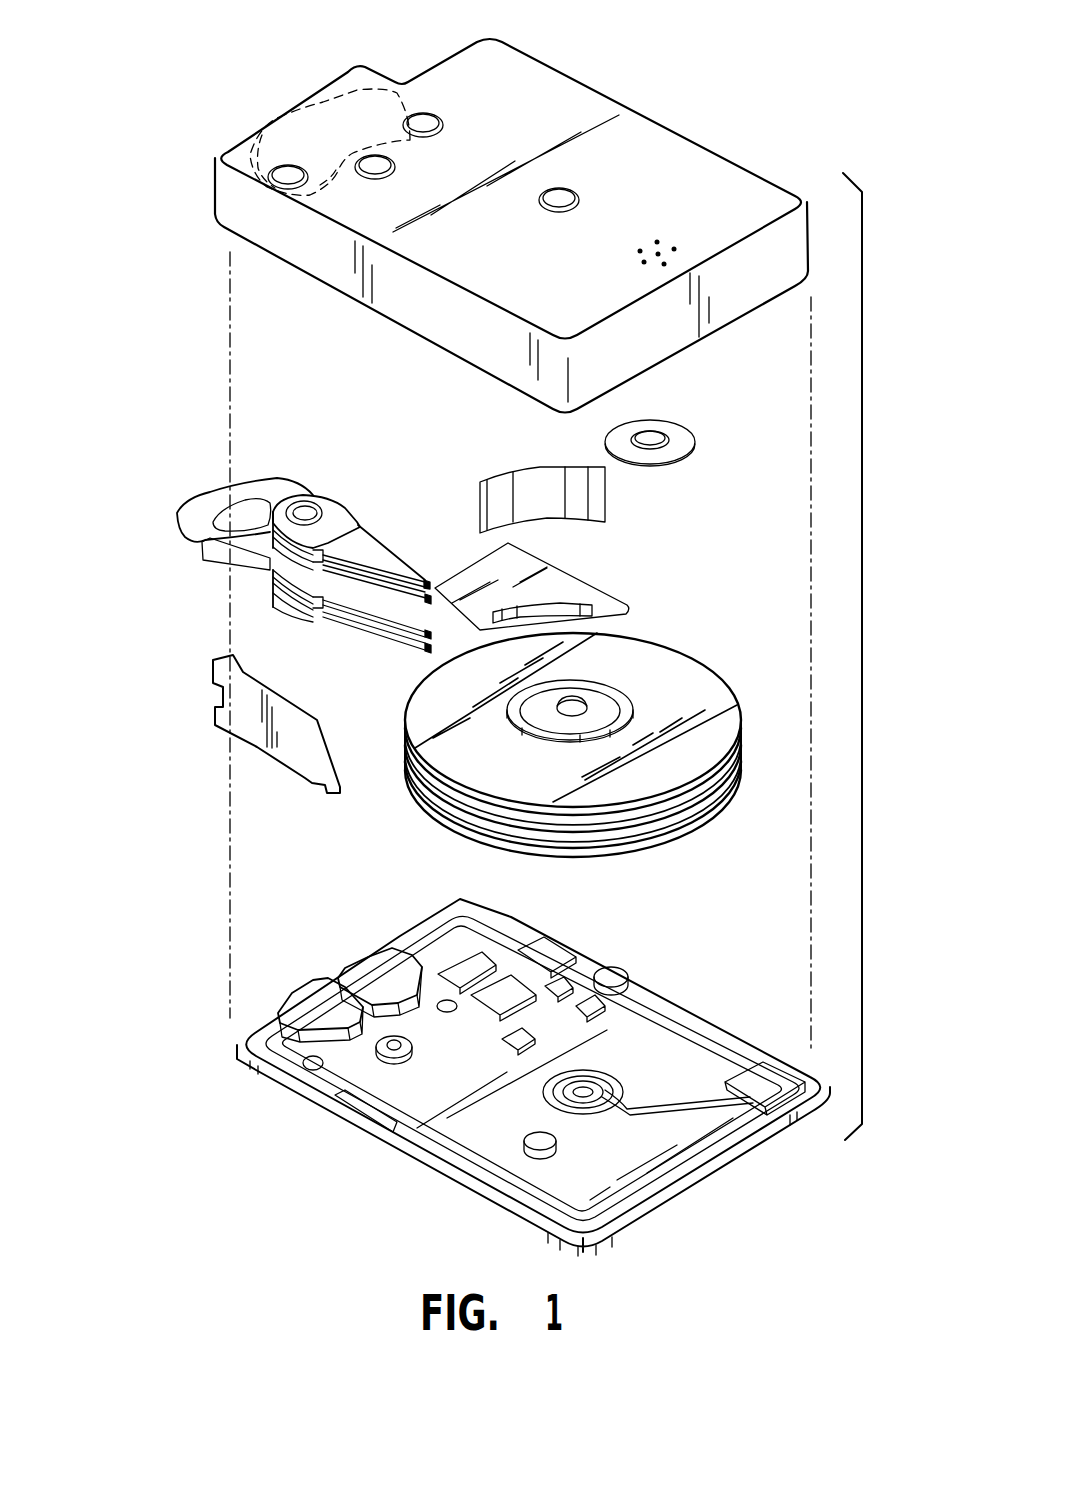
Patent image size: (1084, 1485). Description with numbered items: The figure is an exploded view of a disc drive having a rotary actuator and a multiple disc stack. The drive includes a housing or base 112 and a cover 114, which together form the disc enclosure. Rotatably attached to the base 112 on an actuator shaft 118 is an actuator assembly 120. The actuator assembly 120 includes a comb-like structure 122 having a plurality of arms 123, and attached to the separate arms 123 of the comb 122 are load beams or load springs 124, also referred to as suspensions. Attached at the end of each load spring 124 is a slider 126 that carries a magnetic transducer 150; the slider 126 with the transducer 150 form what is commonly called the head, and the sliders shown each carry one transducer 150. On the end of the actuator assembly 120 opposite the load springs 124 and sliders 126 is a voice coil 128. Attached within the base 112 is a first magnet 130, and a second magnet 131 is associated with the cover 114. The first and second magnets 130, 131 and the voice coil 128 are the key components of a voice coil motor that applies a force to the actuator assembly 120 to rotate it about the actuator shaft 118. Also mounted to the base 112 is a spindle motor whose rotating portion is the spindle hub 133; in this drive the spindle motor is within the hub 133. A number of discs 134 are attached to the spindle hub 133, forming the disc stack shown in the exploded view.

The base 112 is at (712, 1046).
The cover 114 is at (683, 160).
The actuator shaft 118 is at (307, 507).
The actuator assembly 120 is at (250, 562).
The comb-like structure 122 is at (332, 625).
The arms 123 is at (358, 518).
The load beams or load springs 124 is at (378, 553).
The slider 126 is at (427, 580).
The voice coil 128 is at (203, 511).
The first magnet 130 is at (334, 97).
The second magnet 131 is at (303, 1003).
The spindle hub 133 is at (575, 700).
The discs 134 is at (702, 690).
The magnetic transducer 150 is at (477, 587).